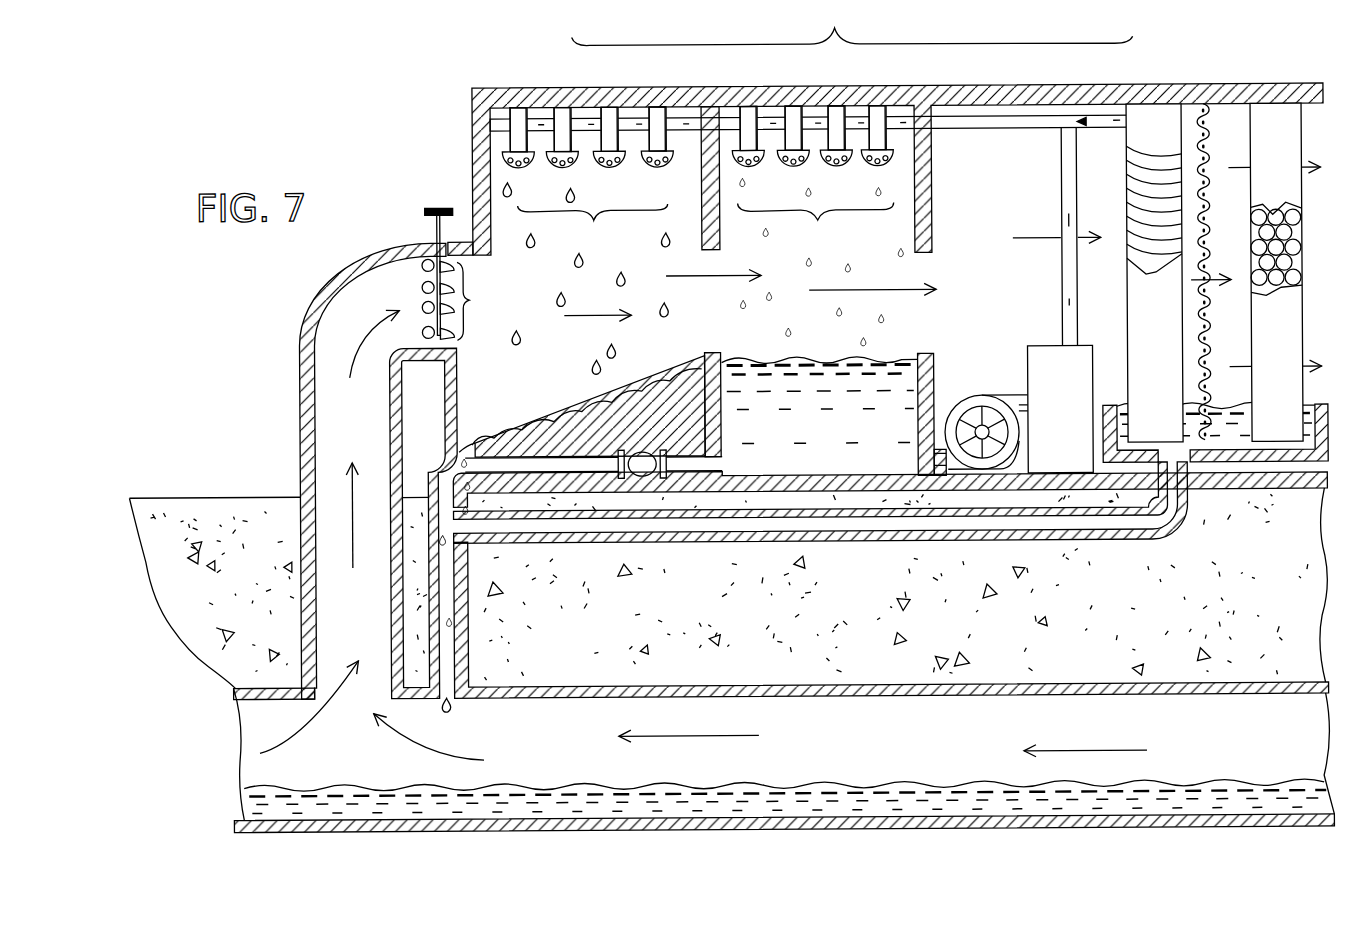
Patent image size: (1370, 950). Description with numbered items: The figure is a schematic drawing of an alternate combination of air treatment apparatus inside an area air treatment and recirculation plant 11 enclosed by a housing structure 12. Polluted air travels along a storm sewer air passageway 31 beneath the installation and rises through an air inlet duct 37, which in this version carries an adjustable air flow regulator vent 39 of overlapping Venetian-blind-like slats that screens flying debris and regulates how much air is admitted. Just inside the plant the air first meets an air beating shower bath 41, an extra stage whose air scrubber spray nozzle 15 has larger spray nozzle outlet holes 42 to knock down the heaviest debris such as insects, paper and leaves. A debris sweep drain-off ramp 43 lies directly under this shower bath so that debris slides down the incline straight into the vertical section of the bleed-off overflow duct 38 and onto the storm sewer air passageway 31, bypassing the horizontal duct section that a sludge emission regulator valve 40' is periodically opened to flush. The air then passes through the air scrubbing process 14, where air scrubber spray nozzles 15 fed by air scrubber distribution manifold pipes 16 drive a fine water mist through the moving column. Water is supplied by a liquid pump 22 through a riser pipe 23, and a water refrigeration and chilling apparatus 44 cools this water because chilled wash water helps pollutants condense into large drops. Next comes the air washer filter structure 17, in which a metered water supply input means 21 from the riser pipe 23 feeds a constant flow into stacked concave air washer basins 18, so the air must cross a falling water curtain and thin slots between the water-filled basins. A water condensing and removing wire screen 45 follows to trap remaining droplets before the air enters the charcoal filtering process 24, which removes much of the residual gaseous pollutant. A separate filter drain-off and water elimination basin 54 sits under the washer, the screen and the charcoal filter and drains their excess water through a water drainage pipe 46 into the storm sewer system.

The area air treatment and recirculation plant 11 is at (835, 30).
The housing structure 12 is at (1148, 88).
The air scrubbing process 14 is at (817, 222).
The air scrubber spray nozzle 15 is at (651, 168).
The air scrubber distribution manifold pipe 16 is at (771, 133).
The air washer filter structure 17 is at (1154, 273).
The concave air washer basin 18 is at (1117, 216).
The metered water supply input means 21 is at (1091, 141).
The liquid pump 22 is at (978, 397).
The riser pipe 23 is at (1061, 190).
The charcoal filtering process 24 is at (1289, 167).
The storm sewer air passageway 31 is at (864, 757).
The air inlet duct 37 is at (305, 298).
The bleed-off overflow duct 38 is at (600, 450).
The adjustable air flow regulator vent 39 is at (437, 208).
The sludge emission regulator valve 40' is at (593, 449).
The air beating shower bath 41 is at (593, 221).
The spray nozzle outlet hole 42 is at (560, 168).
The debris sweep drain-off ramp 43 is at (600, 398).
The water refrigeration and chilling apparatus 44 is at (1072, 401).
The water condensing and removing wire screen 45 is at (1205, 136).
The water drainage pipe 46 is at (662, 552).
The filter drain-off and water elimination basin 54 is at (1326, 418).